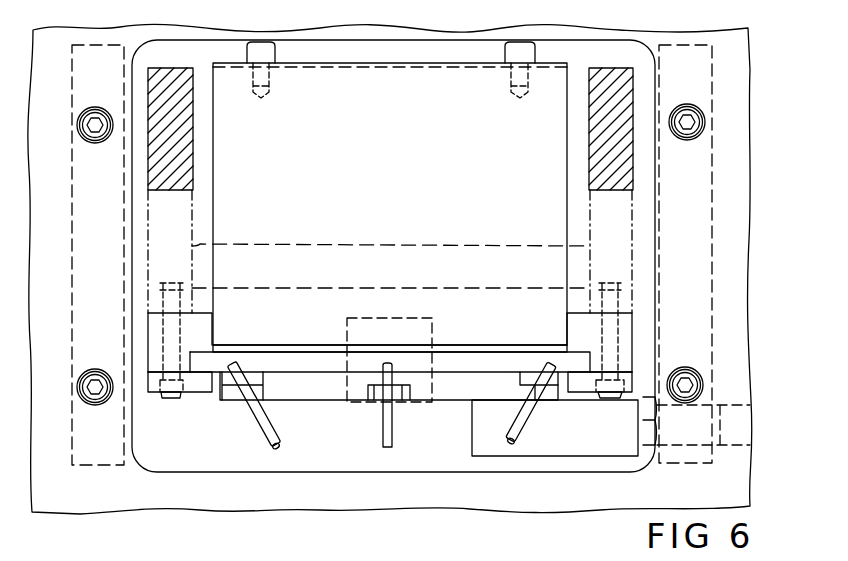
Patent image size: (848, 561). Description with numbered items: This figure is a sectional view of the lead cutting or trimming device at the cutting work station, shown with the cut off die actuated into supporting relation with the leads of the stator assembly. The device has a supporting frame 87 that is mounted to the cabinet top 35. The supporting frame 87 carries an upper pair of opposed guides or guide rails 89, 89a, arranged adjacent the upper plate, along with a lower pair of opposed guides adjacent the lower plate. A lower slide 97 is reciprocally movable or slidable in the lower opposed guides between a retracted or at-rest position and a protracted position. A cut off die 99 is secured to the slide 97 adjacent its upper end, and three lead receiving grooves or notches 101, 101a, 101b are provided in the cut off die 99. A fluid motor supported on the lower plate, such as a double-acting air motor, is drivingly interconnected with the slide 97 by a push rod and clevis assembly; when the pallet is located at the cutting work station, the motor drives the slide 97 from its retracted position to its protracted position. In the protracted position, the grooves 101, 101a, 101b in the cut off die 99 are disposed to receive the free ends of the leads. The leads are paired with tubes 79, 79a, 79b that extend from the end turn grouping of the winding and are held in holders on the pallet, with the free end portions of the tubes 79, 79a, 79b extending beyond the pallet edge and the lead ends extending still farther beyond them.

The cabinet top 35 is at (76, 514).
The supporting frame 87 is at (634, 170).
The upper guide rail 89 is at (156, 345).
The upper guide rail 89a is at (632, 351).
The lower slide 97 is at (480, 362).
The cut off die 99 is at (304, 414).
The lead receiving groove 101 is at (240, 412).
The lead receiving groove 101a is at (400, 408).
The lead receiving groove 101b is at (540, 405).
The tube 79 is at (264, 438).
The tube 79a is at (383, 432).
The tube 79b is at (527, 420).